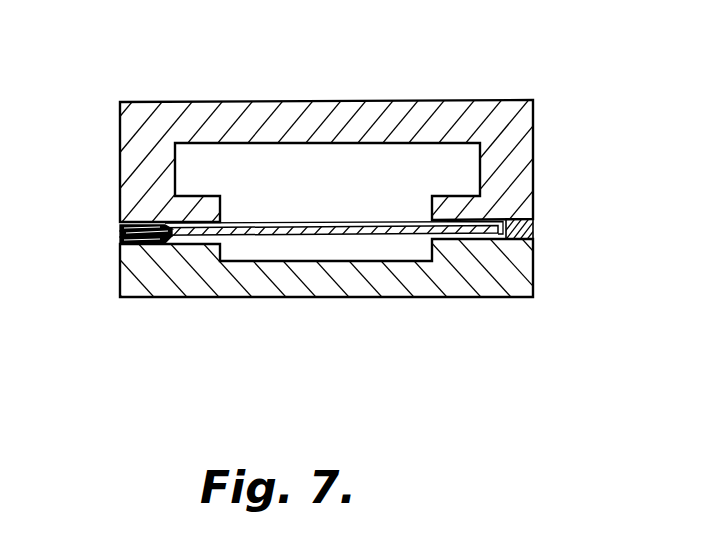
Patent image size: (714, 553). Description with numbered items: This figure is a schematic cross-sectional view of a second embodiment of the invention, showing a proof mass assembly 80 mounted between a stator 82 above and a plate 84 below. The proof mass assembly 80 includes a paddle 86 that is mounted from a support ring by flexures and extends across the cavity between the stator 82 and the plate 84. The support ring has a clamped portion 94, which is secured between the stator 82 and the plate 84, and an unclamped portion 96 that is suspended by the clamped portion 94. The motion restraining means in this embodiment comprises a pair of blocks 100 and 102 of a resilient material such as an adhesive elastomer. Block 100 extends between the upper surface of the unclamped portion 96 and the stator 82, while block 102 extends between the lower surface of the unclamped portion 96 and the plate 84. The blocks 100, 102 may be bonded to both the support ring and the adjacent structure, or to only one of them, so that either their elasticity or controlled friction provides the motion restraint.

The proof mass assembly 80 is at (347, 176).
The stator 82 is at (437, 101).
The plate 84 is at (538, 263).
The paddle 86 is at (326, 227).
The clamped portion 94 is at (534, 224).
The unclamped portion 96 is at (122, 235).
The block 100 is at (122, 228).
The block 102 is at (122, 244).